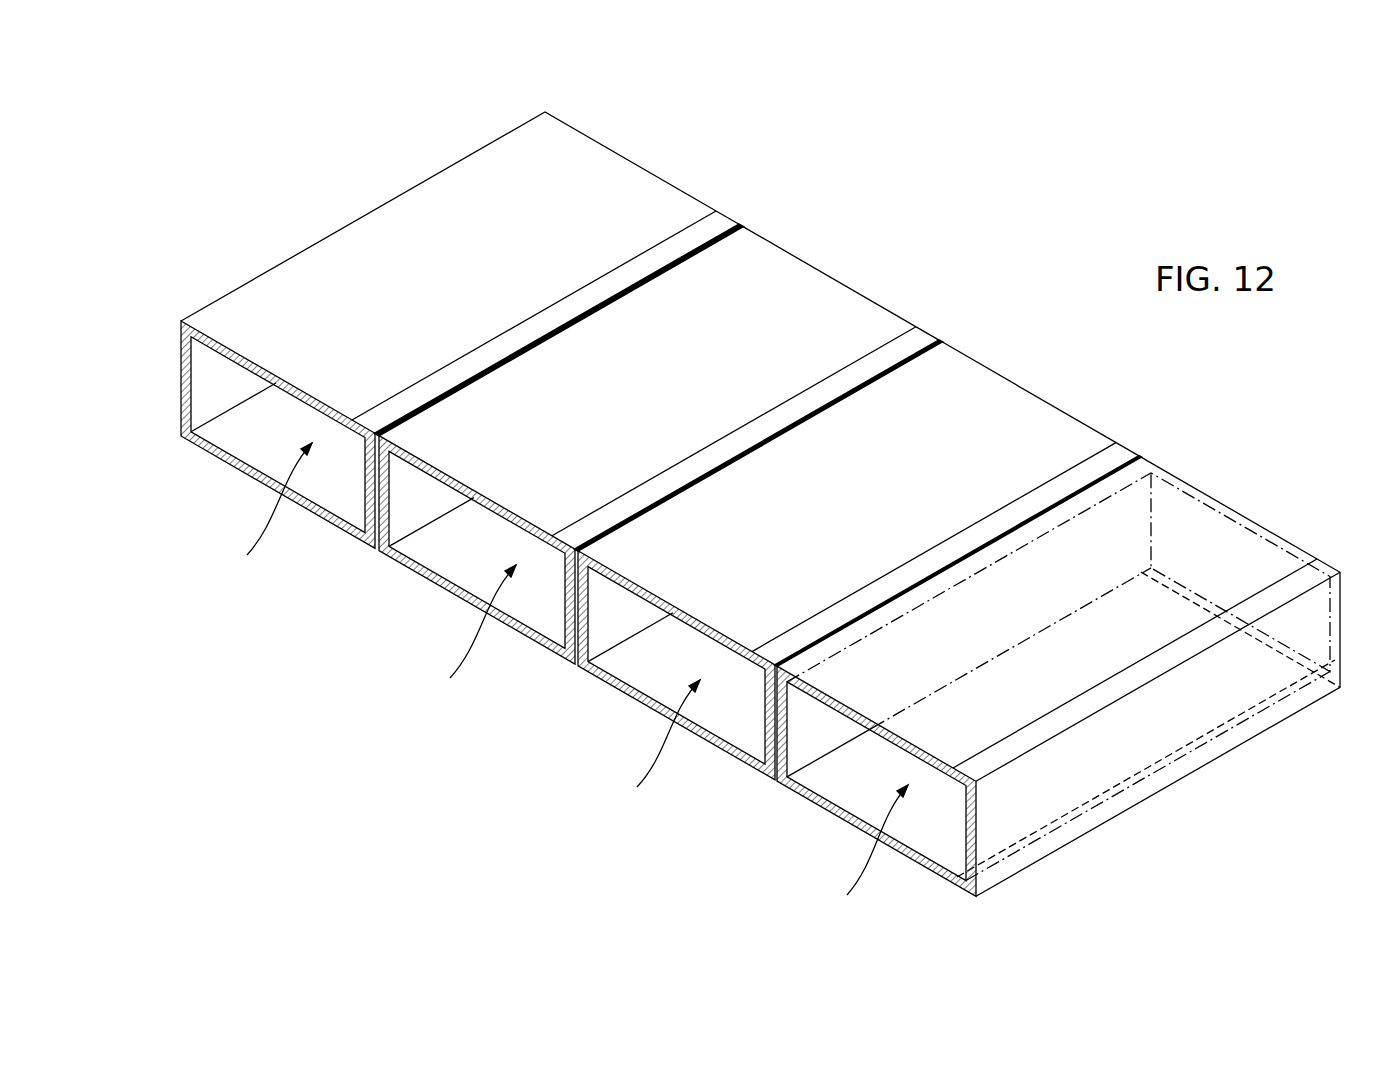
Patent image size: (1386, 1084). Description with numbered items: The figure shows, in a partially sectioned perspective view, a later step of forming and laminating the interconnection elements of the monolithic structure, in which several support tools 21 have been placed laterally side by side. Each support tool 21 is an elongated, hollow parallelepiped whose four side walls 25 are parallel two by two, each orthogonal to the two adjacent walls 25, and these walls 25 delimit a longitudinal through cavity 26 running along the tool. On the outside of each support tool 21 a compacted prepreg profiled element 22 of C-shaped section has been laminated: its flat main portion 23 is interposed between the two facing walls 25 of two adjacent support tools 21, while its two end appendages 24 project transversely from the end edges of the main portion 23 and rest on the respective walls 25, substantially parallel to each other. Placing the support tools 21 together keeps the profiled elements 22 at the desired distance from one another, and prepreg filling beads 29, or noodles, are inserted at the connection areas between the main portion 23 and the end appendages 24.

The support tool 21 is at (610, 197).
The profiled element 22 is at (537, 335).
The main portion 23 is at (372, 444).
The end appendage 24 is at (498, 353).
The side wall 25 is at (568, 170).
The longitudinal through cavity 26 is at (567, 680).
The filling bead 29 is at (652, 277).